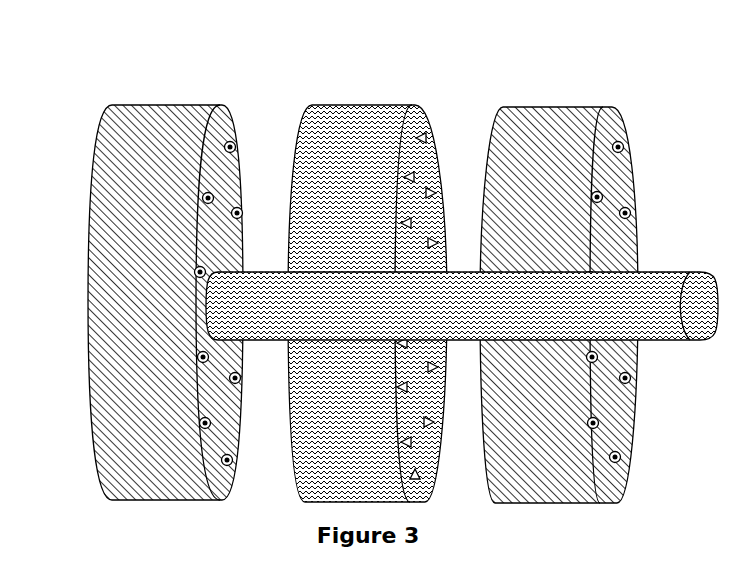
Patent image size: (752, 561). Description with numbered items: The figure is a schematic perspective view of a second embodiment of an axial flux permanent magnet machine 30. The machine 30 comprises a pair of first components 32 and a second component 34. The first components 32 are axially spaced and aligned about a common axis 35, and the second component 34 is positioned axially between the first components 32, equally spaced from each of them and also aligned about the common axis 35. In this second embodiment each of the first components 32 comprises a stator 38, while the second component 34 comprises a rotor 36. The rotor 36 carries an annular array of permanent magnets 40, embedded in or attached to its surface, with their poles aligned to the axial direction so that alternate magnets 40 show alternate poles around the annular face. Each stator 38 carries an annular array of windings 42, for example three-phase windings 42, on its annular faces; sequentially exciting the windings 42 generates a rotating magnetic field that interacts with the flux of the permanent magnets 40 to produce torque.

The axial flux permanent magnet machine 30 is at (88, 72).
The first components 32 is at (366, 276).
The second component 34 is at (368, 275).
The common axis 35 is at (643, 340).
The rotor 36 is at (303, 127).
The stator 38 is at (105, 130).
The permanent magnets 40 is at (443, 193).
The windings 42 is at (637, 170).